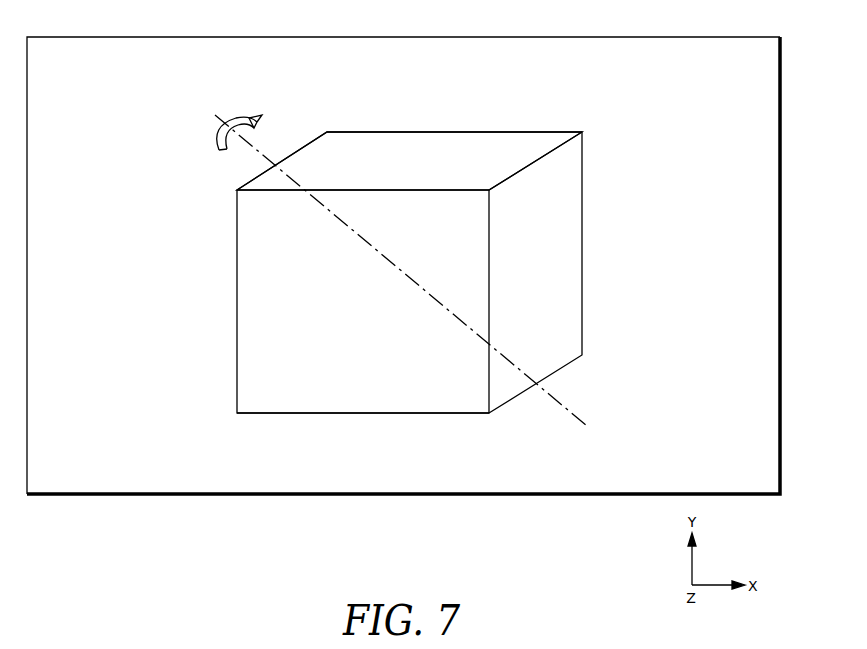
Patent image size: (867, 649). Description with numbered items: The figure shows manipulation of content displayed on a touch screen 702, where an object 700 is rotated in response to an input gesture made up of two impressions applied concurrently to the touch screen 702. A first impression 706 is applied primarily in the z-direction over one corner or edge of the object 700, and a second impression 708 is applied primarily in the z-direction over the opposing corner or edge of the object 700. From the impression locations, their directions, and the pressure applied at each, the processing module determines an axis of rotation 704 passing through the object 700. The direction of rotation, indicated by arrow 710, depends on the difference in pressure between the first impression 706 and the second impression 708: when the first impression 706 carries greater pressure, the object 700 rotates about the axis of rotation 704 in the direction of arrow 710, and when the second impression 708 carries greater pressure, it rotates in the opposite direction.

The object 700 is at (603, 222).
The touch screen 702 is at (722, 37).
The axis of rotation 704 is at (565, 408).
The first impression 706 is at (445, 200).
The second impression 708 is at (288, 404).
The arrow 710 is at (216, 132).